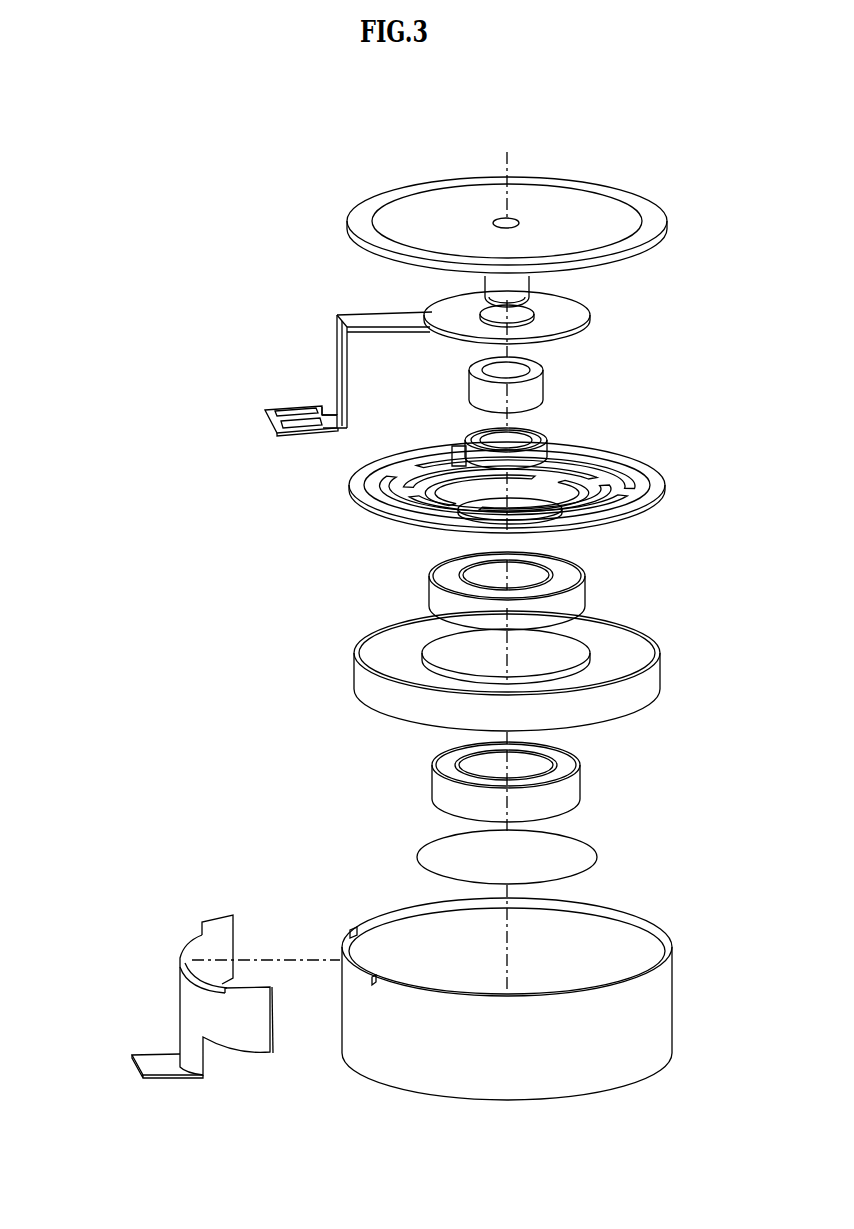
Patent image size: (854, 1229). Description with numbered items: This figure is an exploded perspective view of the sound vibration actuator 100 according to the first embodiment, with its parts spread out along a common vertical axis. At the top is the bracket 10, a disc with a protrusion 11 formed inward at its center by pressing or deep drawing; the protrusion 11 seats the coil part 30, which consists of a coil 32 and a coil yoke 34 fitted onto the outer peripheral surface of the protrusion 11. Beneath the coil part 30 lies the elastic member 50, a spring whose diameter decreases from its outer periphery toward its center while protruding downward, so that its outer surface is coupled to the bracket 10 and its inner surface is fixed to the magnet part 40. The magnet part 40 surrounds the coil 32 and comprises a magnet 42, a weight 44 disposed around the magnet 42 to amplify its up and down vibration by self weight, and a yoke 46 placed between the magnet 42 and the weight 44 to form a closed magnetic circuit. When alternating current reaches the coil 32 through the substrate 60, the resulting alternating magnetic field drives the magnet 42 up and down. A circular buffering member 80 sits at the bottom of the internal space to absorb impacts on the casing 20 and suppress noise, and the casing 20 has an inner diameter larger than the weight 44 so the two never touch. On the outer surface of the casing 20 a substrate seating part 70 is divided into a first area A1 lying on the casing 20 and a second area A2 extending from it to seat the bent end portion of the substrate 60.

The sound vibration actuator 100 is at (526, 128).
The bracket 10 is at (347, 228).
The protrusion 11 is at (530, 285).
The casing 20 is at (672, 1000).
The coil part 30 is at (748, 355).
The coil 32 is at (543, 370).
The coil yoke 34 is at (547, 443).
The magnet part 40 is at (716, 578).
The magnet 42 is at (580, 782).
The weight 44 is at (660, 670).
The yoke 46 is at (585, 596).
The elastic member 50 is at (374, 525).
The substrate 60 is at (266, 422).
The substrate seating part 70 is at (272, 1020).
The buffering member 80 is at (597, 857).
The first area A1 is at (161, 973).
The second area A2 is at (138, 1038).